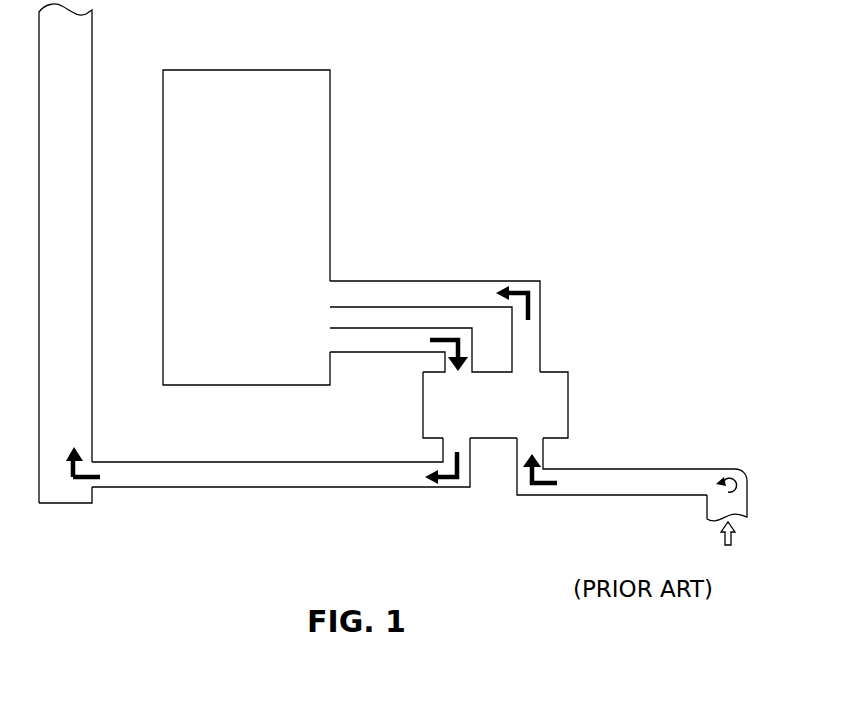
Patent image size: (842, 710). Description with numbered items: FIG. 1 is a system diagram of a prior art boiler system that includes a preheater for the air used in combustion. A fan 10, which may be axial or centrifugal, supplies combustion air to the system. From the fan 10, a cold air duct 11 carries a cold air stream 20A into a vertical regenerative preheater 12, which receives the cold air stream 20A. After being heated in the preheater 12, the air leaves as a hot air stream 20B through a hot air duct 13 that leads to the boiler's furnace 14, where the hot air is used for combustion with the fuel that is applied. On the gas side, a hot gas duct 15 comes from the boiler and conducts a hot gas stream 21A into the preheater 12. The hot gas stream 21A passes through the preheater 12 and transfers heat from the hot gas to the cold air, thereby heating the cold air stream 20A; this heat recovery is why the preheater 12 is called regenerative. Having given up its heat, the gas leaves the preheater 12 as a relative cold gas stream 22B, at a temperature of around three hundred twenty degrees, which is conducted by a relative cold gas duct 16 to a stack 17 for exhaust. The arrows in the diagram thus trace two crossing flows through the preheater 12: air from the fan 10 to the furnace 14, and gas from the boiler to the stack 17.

The fan 10 is at (727, 467).
The cold air duct 11 is at (672, 487).
The vertical regenerative preheater 12 is at (508, 420).
The hot air duct 13 is at (385, 295).
The furnace 14 is at (259, 200).
The hot gas duct 15 is at (372, 340).
The relative cold gas duct 16 is at (258, 470).
The stack 17 is at (77, 80).
The cold air stream 20A is at (563, 474).
The hot air stream 20B is at (490, 301).
The hot gas stream 21A is at (426, 350).
The relative cold gas stream 22B is at (417, 469).